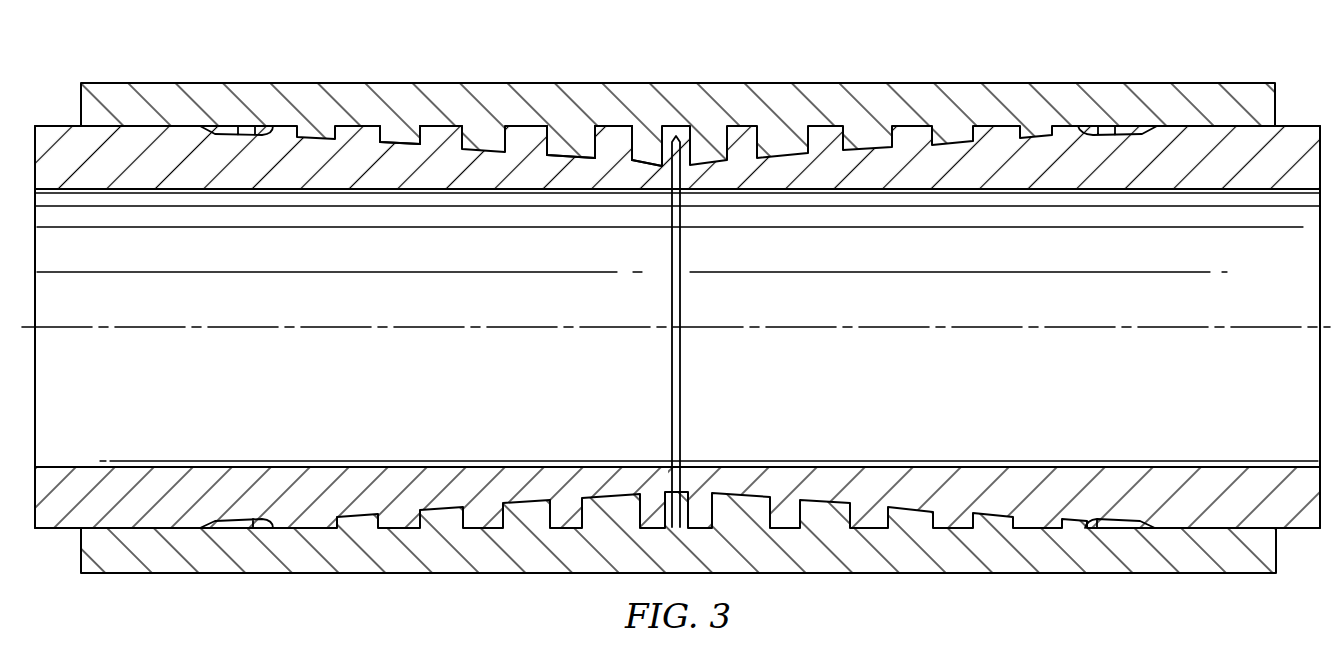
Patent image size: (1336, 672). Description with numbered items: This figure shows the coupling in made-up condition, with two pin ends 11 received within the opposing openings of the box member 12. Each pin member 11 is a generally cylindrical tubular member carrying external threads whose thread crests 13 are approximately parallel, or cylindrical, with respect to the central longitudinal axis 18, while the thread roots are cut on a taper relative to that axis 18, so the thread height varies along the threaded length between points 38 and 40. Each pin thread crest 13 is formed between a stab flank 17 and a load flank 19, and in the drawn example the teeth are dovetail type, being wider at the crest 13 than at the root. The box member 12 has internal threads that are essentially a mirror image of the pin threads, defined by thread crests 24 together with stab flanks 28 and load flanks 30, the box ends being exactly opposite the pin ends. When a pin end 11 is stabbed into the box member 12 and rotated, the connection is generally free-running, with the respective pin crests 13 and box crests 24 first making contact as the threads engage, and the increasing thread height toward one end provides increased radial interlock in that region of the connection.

The pin member 11 is at (533, 163).
The box member 12 is at (822, 83).
The thread crests 13 is at (610, 130).
The stab flank 17 is at (630, 135).
The load flank 19 is at (593, 138).
The load flanks 30 is at (442, 126).
The point 38 is at (238, 126).
The stab flanks 28 is at (372, 142).
The thread crests 24 is at (399, 145).
The point 40 is at (678, 177).
The central longitudinal axis 18 is at (930, 328).